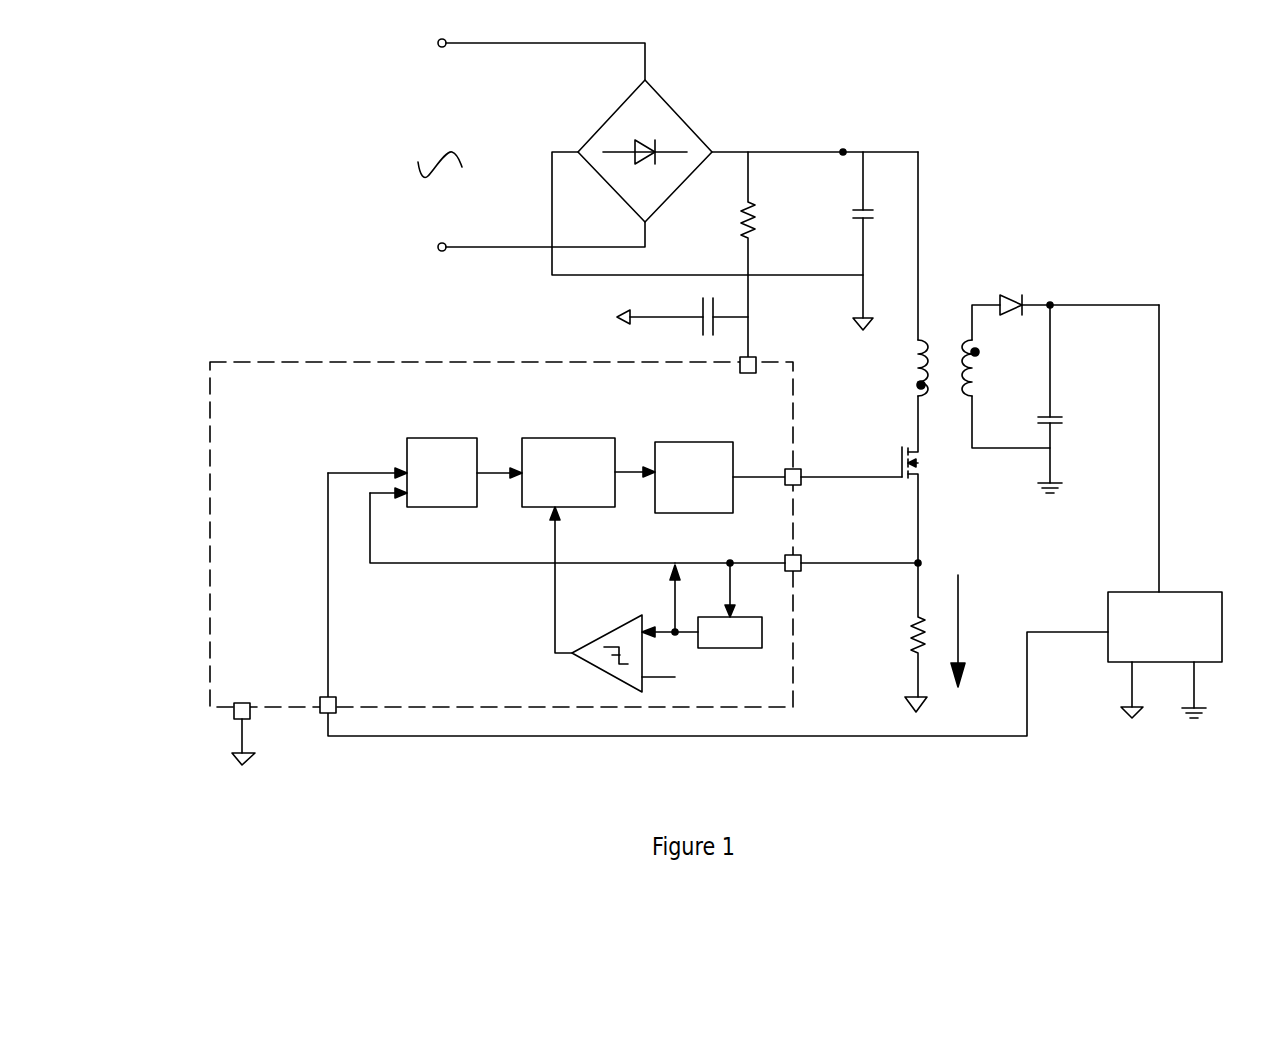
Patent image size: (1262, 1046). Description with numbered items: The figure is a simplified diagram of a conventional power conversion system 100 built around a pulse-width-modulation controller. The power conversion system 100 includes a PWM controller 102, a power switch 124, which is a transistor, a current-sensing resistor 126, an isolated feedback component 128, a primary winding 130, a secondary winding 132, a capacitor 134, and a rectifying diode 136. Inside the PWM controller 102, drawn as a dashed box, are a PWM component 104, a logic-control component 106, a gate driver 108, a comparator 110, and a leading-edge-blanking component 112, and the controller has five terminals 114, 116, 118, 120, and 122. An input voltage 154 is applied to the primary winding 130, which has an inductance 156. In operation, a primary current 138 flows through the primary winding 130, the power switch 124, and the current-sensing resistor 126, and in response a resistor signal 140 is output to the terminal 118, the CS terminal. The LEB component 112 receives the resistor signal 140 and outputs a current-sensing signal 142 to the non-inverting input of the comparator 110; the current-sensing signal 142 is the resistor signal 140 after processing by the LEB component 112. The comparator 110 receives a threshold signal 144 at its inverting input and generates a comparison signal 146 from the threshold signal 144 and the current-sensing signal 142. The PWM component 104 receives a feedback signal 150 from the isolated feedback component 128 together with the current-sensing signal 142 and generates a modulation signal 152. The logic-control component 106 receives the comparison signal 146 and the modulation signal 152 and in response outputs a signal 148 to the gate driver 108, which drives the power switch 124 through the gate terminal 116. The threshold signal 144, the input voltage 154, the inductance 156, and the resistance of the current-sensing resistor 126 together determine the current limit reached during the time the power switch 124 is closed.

The power conversion system 100 is at (316, 150).
The PWM controller 102 is at (252, 352).
The PWM component 104 is at (428, 438).
The logic-control component 106 is at (555, 438).
The gate driver 108 is at (710, 442).
The comparator 110 is at (592, 667).
The leading-edge-blanking (LEB) component 112 is at (755, 648).
The terminal 114 is at (740, 373).
The terminal 116 is at (800, 469).
The terminal 118 is at (800, 572).
The terminal 120 is at (337, 697).
The terminal 122 is at (240, 703).
The power switch 124 is at (923, 474).
The current-sensing resistor 126 is at (910, 640).
The isolated feedback component 128 is at (1178, 592).
The primary winding 130 is at (924, 338).
The secondary winding 132 is at (962, 395).
The capacitor 134 is at (1052, 413).
The rectifying diode 136 is at (1005, 293).
The primary current 138 is at (918, 547).
The resistor signal 140 is at (798, 555).
The current-sensing signal 142 is at (690, 630).
The threshold signal 144 is at (650, 677).
The comparison signal 146 is at (555, 598).
The signal 148 is at (625, 468).
The feedback signal 150 is at (365, 736).
The modulation signal 152 is at (487, 470).
The input voltage 154 is at (922, 181).
The inductance 156 is at (920, 368).